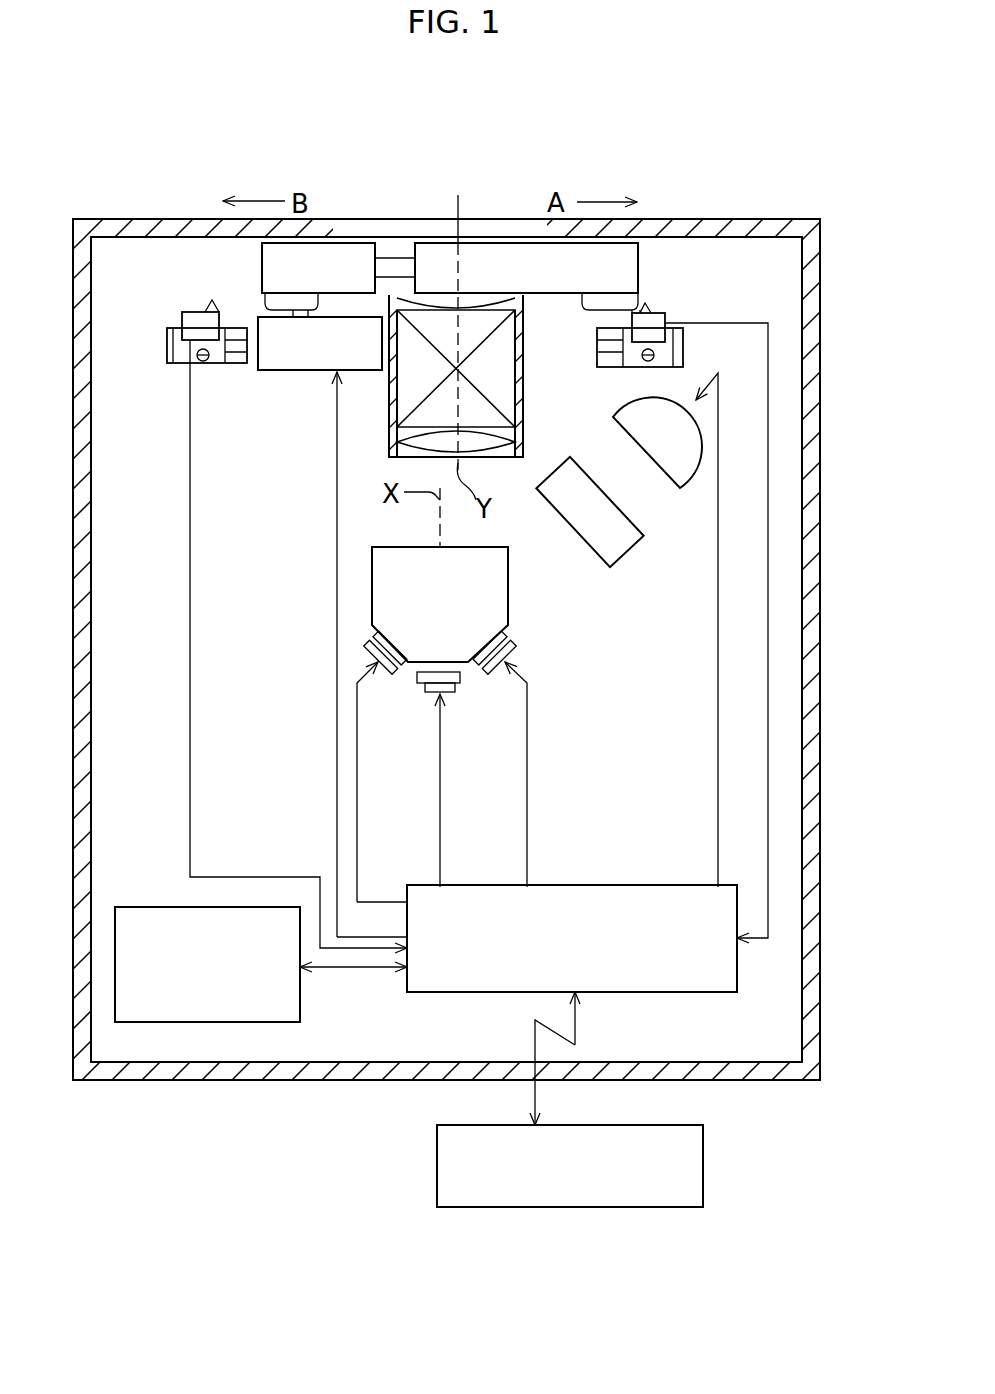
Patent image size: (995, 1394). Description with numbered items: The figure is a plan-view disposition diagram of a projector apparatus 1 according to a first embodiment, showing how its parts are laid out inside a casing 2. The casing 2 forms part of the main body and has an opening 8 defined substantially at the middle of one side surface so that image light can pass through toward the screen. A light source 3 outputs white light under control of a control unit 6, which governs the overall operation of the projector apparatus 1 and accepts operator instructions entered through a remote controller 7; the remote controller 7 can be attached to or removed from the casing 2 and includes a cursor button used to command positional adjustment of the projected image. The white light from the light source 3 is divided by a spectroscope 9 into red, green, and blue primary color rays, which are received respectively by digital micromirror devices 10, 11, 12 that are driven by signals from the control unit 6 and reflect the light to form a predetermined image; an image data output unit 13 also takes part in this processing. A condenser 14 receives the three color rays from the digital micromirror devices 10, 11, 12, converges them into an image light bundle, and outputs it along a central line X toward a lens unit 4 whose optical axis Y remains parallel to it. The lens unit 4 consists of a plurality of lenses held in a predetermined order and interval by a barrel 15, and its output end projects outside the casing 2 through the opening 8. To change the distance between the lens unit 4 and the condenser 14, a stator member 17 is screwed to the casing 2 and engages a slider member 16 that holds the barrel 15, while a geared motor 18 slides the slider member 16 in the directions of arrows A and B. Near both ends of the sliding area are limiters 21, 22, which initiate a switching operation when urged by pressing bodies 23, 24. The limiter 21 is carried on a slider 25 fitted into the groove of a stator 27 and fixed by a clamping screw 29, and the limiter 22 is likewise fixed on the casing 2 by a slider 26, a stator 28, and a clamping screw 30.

The projector apparatus 1 is at (388, 181).
The casing 2 is at (695, 219).
The light source 3 is at (677, 448).
The lens unit 4 is at (493, 458).
The control unit 6 is at (613, 885).
The remote controller 7 is at (437, 1172).
The opening 8 is at (505, 227).
The spectroscope 9 is at (612, 532).
The digital micromirror device 10 is at (376, 680).
The digital micromirror device 11 is at (457, 692).
The digital micromirror device 12 is at (515, 643).
The image data output unit 13 is at (180, 905).
The condenser 14 is at (456, 613).
The barrel 15 is at (523, 401).
The slider member 16 is at (330, 288).
The stator member 17 is at (570, 284).
The geared motor 18 is at (328, 358).
The limiter 21 is at (648, 313).
The limiter 22 is at (198, 312).
The pressing body 23 is at (597, 312).
The pressing body 24 is at (266, 305).
The slider 25 is at (668, 368).
The slider 26 is at (222, 365).
The stator 27 is at (680, 357).
The stator 28 is at (167, 358).
The clamping screw 29 is at (646, 362).
The clamping screw 30 is at (203, 363).